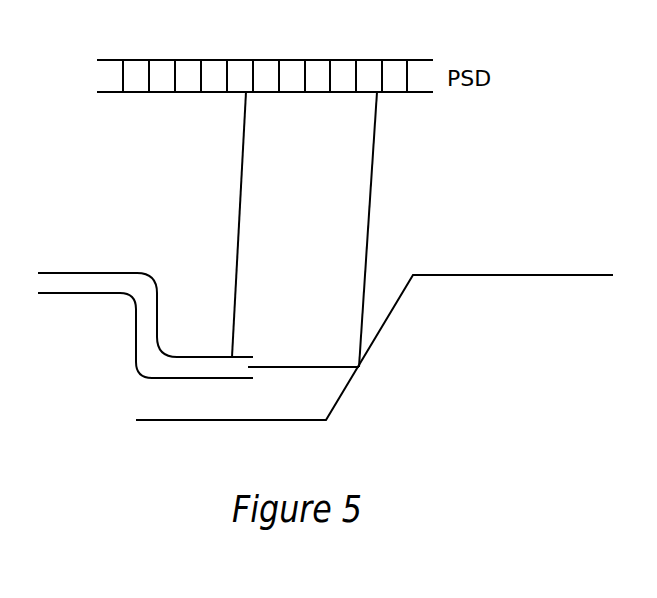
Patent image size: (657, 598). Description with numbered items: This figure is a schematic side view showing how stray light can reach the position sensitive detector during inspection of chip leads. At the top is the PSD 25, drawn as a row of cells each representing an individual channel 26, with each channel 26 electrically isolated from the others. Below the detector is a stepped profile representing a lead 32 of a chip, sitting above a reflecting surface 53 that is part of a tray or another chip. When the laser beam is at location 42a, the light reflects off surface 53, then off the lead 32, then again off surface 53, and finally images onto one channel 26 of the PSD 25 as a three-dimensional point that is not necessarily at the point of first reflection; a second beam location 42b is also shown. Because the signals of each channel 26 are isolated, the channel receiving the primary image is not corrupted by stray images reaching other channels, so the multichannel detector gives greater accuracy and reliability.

The PSD 25 is at (163, 95).
The channel 26 is at (240, 72).
The laser beam location 42a is at (244, 167).
The laser beam location 42b is at (374, 160).
The lead 32 is at (132, 365).
The surface 53 is at (337, 402).